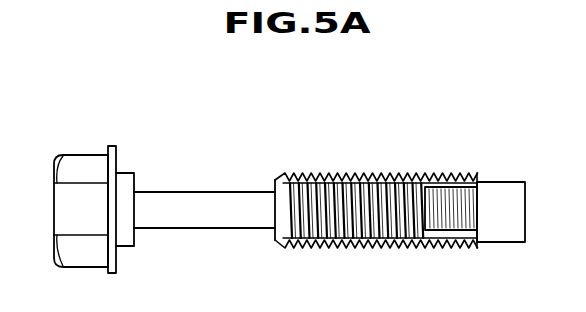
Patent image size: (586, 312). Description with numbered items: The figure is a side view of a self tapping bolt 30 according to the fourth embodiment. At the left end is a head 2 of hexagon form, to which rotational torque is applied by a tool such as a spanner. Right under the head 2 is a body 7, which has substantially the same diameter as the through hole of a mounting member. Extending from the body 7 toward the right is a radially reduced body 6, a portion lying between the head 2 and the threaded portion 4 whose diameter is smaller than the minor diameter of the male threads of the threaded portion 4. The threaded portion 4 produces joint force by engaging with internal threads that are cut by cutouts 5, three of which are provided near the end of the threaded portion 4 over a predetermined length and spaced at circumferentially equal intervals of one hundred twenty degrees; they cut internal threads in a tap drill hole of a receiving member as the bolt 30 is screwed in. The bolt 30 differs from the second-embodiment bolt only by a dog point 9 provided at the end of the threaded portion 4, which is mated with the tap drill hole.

The self tapping bolt 30 is at (177, 160).
The head 2 is at (73, 180).
The body 7 is at (121, 177).
The radially reduced body 6 is at (215, 197).
The threaded portion 4 is at (335, 197).
The cutouts 5 is at (442, 243).
The dog point 9 is at (495, 242).